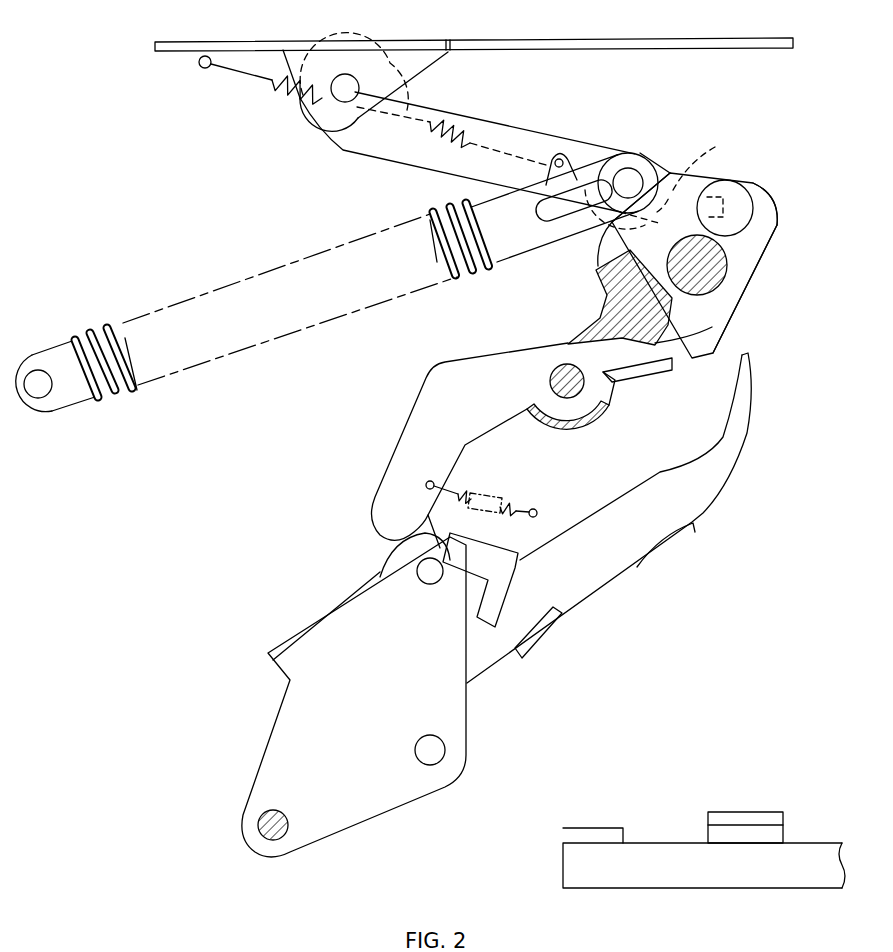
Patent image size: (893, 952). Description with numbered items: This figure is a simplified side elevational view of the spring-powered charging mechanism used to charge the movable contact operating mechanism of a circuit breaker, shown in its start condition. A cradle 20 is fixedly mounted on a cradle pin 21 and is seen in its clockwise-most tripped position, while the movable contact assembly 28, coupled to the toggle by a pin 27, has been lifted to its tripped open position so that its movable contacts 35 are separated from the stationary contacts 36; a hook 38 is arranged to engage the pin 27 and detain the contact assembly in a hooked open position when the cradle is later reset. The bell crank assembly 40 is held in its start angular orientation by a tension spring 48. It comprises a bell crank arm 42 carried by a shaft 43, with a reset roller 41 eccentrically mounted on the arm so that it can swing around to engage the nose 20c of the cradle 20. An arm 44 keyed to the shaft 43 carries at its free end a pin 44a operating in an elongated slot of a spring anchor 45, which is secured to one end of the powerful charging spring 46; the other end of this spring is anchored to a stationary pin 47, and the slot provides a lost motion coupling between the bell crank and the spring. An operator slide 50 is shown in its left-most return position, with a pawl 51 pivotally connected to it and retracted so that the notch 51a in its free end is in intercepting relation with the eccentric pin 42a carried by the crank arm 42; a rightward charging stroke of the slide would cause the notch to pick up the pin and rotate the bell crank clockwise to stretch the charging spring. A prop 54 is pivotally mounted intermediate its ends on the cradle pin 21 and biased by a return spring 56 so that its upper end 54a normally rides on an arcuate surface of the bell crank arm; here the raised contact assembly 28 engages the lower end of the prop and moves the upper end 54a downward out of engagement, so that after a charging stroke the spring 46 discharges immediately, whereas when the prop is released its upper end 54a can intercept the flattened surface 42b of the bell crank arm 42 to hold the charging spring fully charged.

The cradle 20 is at (600, 286).
The nose 20c is at (715, 342).
The cradle pin 21 is at (556, 366).
The pin 27 is at (420, 563).
The movable contact assembly 28 is at (281, 721).
The movable contacts 35 is at (657, 560).
The stationary contacts 36 is at (723, 813).
The hook 38 is at (510, 572).
The bell crank assembly 40 is at (786, 212).
The reset roller 41 is at (742, 187).
The bell crank arm 42 is at (757, 235).
The eccentric pin 42a is at (716, 160).
The flattened surface 42b is at (742, 299).
The shaft 43 is at (708, 282).
The arm 44 is at (665, 195).
The pin 44a is at (623, 170).
The spring anchor 45 is at (533, 243).
The charging spring 46 is at (354, 313).
The stationary pin 47 is at (34, 378).
The tension spring 48 is at (292, 99).
The operator slide 50 is at (541, 41).
The pawl 51 is at (526, 133).
The notch 51a is at (644, 222).
The prop 54 is at (484, 404).
The upper end of prop 54a is at (641, 374).
The return spring 56 is at (484, 493).